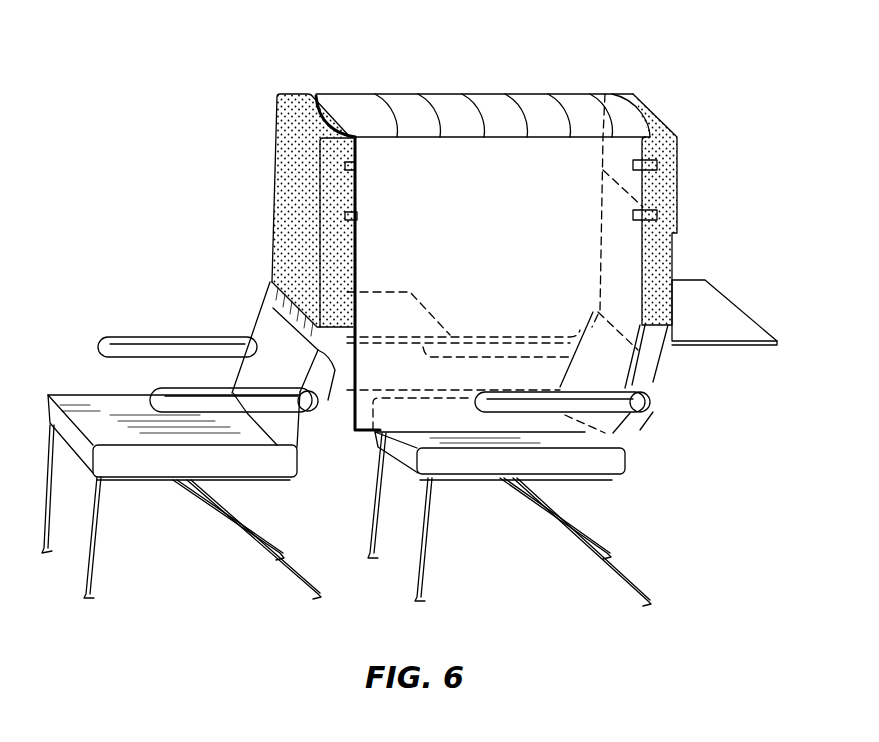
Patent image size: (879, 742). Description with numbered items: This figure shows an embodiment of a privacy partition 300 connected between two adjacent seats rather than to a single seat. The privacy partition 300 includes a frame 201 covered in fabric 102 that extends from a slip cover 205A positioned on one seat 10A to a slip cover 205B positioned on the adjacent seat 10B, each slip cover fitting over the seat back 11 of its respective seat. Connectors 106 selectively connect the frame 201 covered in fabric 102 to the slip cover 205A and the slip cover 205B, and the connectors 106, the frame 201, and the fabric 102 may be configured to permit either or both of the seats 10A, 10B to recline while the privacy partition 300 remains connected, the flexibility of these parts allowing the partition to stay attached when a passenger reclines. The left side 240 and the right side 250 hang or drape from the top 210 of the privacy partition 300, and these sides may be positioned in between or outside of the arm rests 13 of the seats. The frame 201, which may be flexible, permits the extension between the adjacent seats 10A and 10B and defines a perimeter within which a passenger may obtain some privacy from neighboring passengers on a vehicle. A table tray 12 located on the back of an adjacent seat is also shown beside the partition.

The privacy partition 300 is at (491, 234).
The frame 201 is at (420, 99).
The fabric 102 is at (480, 110).
The top 210 is at (570, 102).
The slip cover 205A is at (672, 202).
The slip cover 205B is at (285, 143).
The connectors 106 is at (347, 213).
The left side 240 is at (560, 232).
The table tray 12 is at (733, 318).
The arm rests 13 is at (197, 402).
The seat back 11 is at (280, 300).
The seat 10A is at (227, 467).
The seat 10B is at (567, 462).
The right side 250 is at (340, 378).